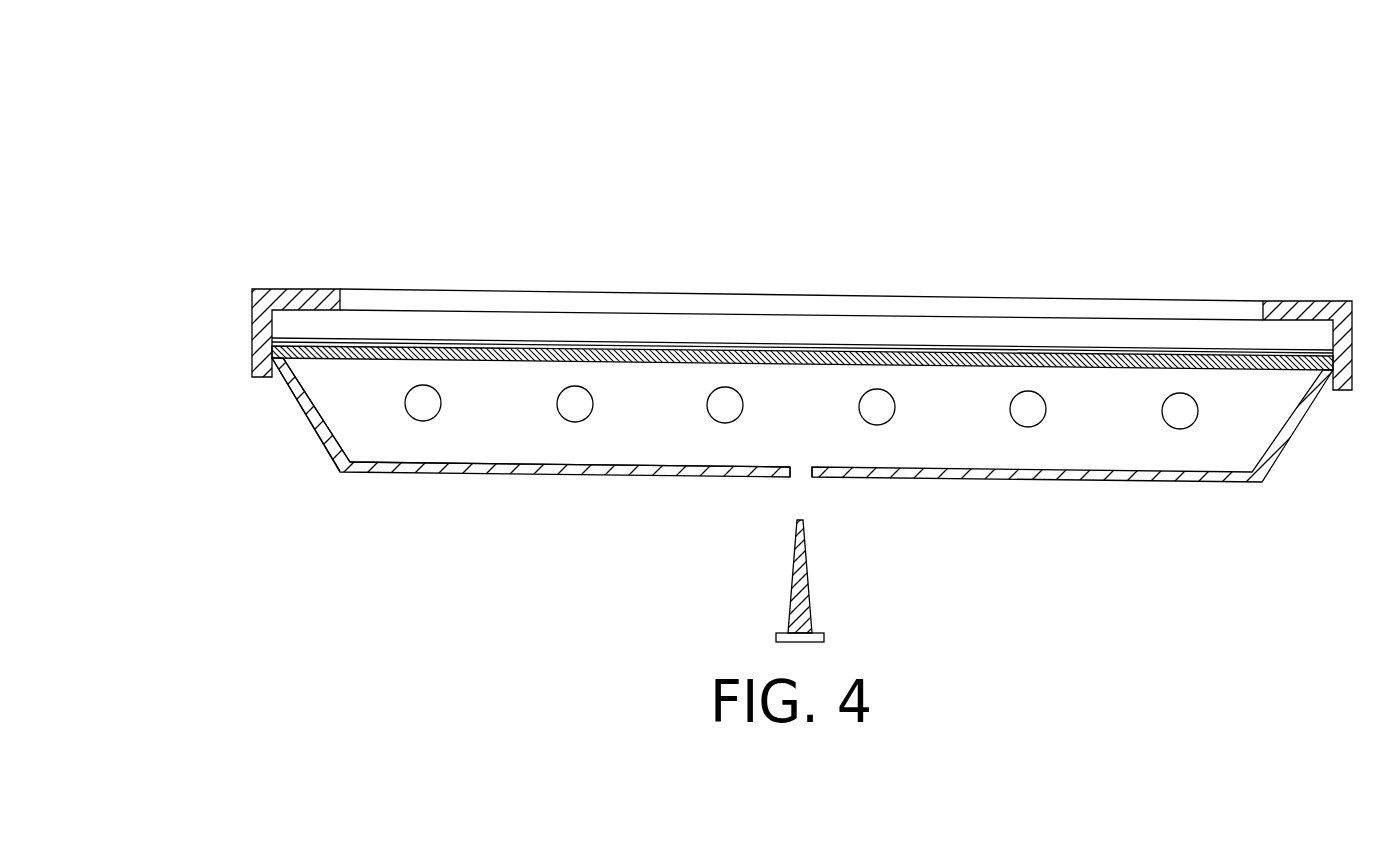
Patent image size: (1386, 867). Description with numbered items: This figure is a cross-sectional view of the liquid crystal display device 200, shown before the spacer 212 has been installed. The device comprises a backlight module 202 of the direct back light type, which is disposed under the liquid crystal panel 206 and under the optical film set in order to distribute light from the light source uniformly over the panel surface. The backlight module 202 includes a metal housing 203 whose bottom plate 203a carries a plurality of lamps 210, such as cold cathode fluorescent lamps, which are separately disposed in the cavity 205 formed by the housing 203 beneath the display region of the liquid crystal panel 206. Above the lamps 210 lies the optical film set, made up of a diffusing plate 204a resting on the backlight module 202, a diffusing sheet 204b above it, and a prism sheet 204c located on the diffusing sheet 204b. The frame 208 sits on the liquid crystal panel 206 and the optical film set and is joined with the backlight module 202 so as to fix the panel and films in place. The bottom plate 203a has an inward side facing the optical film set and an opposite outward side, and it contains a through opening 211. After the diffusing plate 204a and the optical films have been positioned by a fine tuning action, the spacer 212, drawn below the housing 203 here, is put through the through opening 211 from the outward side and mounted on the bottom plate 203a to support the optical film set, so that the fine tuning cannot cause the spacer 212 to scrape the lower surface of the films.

The liquid crystal display device 200 is at (160, 118).
The backlight module 202 is at (282, 395).
The housing 203 is at (330, 457).
The bottom plate 203a is at (508, 455).
The diffusing plate 204a is at (270, 343).
The diffusing sheet 204b is at (270, 345).
The prism sheet 204c is at (270, 340).
The cavity 205 is at (337, 423).
The liquid crystal panel 206 is at (287, 325).
The frame 208 is at (257, 302).
The lamp 210 is at (575, 404).
The through opening 211 is at (803, 478).
The spacer 212 is at (806, 573).